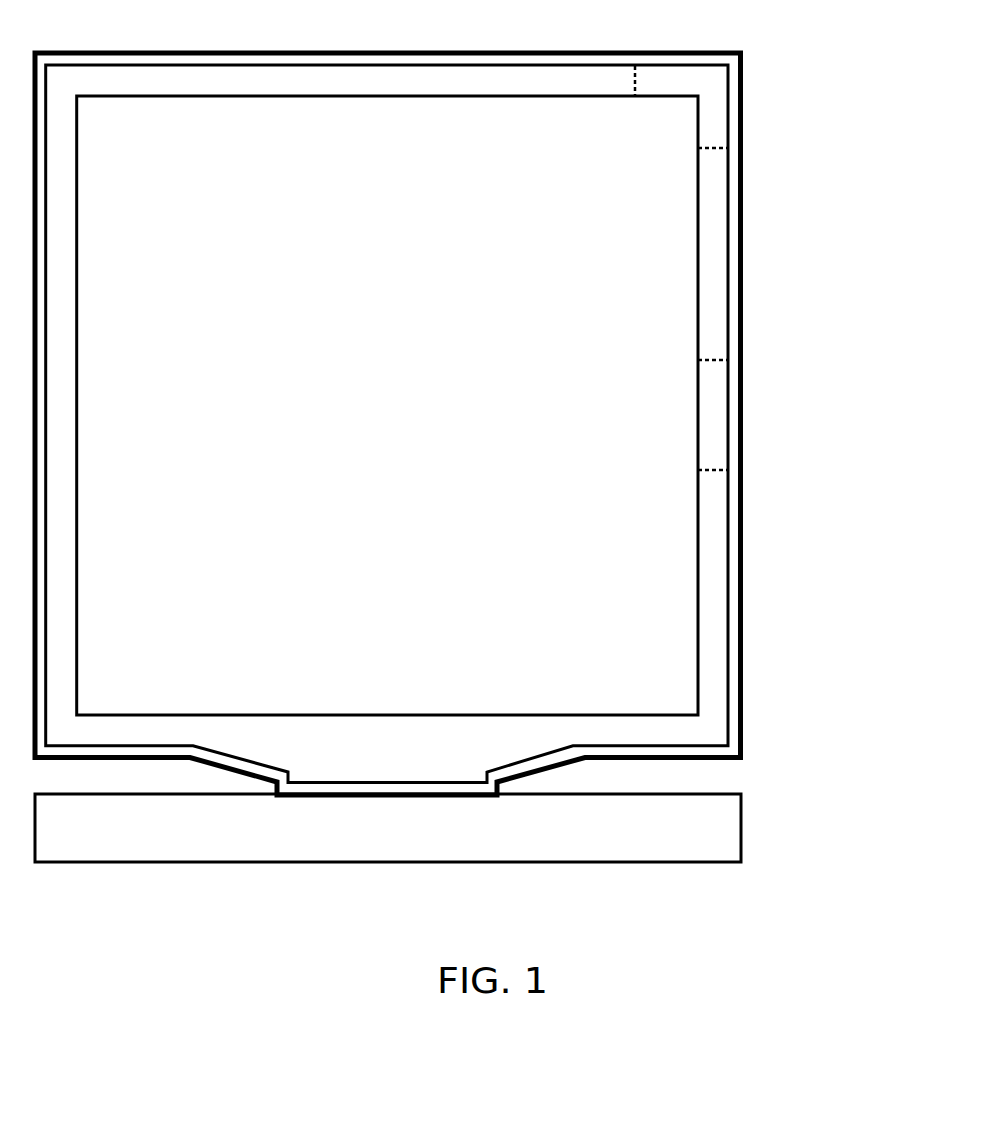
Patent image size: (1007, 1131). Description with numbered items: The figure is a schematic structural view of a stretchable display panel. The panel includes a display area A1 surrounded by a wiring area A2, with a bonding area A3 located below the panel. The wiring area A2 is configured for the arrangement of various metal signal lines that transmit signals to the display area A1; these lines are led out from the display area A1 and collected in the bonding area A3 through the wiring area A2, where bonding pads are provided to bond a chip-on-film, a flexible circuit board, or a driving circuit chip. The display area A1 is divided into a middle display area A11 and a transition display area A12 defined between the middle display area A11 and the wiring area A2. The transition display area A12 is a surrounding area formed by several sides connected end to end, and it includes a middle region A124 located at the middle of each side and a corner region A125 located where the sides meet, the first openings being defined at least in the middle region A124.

The display area A1 is at (862, 178).
The middle display area A11 is at (680, 237).
The transition display area A12 is at (713, 327).
The middle region A124 is at (713, 425).
The corner region A125 is at (697, 85).
The wiring area A2 is at (733, 622).
The bonding area A3 is at (727, 843).